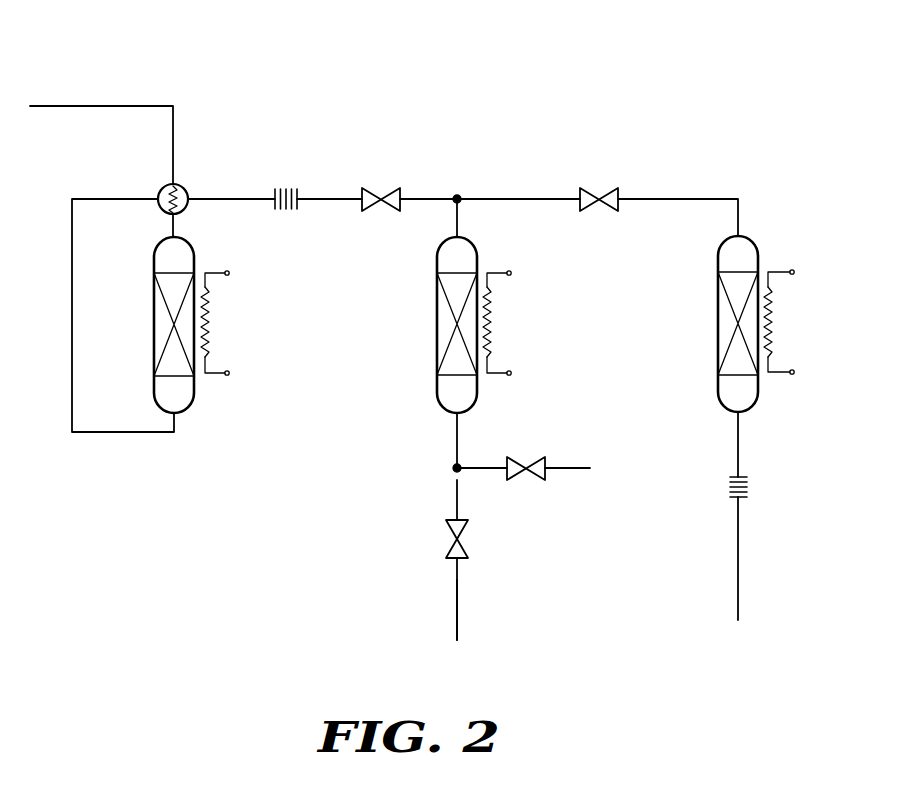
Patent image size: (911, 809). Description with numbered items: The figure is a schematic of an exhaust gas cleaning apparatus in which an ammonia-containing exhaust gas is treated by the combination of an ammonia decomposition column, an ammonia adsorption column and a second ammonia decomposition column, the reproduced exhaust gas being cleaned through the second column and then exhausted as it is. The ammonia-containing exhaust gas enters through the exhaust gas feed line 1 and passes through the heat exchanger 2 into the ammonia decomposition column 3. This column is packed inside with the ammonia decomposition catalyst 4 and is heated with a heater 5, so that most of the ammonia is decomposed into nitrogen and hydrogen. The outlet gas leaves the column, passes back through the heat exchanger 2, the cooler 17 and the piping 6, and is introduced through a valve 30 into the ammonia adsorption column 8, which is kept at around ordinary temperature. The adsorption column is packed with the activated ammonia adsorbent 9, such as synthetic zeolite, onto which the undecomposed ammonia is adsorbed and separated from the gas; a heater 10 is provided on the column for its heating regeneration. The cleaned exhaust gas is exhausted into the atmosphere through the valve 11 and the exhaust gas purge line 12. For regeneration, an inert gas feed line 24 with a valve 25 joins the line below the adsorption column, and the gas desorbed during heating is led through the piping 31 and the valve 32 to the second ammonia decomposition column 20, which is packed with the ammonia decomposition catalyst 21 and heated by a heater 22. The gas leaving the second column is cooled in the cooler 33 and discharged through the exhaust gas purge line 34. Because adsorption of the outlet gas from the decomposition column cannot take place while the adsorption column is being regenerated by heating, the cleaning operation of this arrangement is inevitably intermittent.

The exhaust gas feed line 1 is at (107, 105).
The heat exchanger 2 is at (163, 187).
The ammonia decomposition column 3 is at (167, 253).
The ammonia decomposition catalyst 4 is at (160, 313).
The heater 5 is at (208, 307).
The piping 6 is at (90, 432).
The cooler 17 is at (285, 188).
The valve 30 is at (398, 188).
The piping 31 is at (500, 199).
The valve 32 is at (603, 190).
The ammonia adsorption column 8 is at (445, 263).
The ammonia adsorbent 9 is at (440, 322).
The heater 10 is at (490, 322).
The valve 11 is at (455, 538).
The exhaust gas purge line 12 is at (455, 598).
The inert gas feed line 24 is at (567, 468).
The valve 25 is at (538, 460).
The second ammonia decomposition column 20 is at (730, 263).
The ammonia decomposition catalyst 21 is at (722, 322).
The heater 22 is at (770, 360).
The cooler 33 is at (730, 497).
The exhaust gas purge line 34 is at (738, 568).